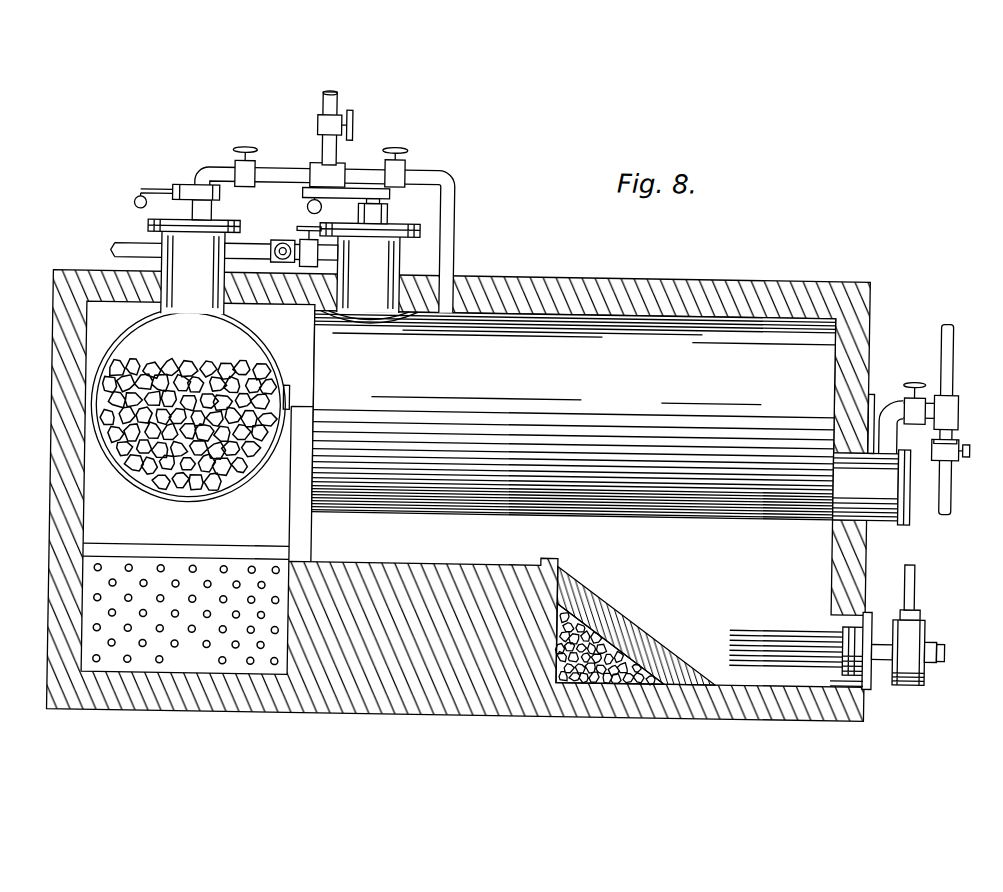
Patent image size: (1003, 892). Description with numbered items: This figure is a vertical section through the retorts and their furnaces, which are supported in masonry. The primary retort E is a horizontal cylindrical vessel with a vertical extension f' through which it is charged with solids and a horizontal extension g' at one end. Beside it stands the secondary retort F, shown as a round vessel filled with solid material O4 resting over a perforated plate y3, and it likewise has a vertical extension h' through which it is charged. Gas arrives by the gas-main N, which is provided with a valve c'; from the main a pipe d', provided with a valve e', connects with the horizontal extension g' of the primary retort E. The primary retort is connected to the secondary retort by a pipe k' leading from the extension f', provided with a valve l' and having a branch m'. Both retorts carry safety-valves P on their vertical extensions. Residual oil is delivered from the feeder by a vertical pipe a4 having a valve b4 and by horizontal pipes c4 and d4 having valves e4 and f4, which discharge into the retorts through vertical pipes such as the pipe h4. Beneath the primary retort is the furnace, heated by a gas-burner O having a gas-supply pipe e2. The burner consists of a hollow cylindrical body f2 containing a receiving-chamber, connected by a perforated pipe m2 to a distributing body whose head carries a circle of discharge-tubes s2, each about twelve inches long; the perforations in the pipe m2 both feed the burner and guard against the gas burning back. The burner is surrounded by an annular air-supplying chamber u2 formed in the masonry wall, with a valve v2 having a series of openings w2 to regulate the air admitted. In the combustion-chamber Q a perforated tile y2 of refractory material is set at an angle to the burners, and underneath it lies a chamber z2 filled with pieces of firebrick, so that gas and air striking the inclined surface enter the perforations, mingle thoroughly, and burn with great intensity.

The vertical pipe a4 is at (332, 99).
The valve b4 is at (349, 126).
The horizontal pipe c4 is at (287, 172).
The horizontal pipe d4 is at (360, 174).
The valve e4 is at (236, 152).
The valve f4 is at (403, 152).
The safety-valve P is at (195, 193).
The pipe k' is at (135, 234).
The vertical extension h' is at (282, 229).
The valve l' is at (303, 233).
The branch m' is at (267, 258).
The vertical extension f' is at (421, 240).
The vertical pipe h4 is at (451, 268).
The secondary retort F is at (245, 352).
The fuel O4 is at (188, 409).
The primary retort E is at (574, 415).
The combustion-chamber Q is at (694, 617).
The gas-main N is at (951, 364).
The pipe d' is at (890, 410).
The valve e' is at (919, 393).
The valve c' is at (960, 443).
The horizontal extension g' is at (906, 460).
The discharge-tubes s2 is at (762, 633).
The annular air-supplying chamber u2 is at (852, 670).
The valve v2 is at (869, 612).
The pipe m2 is at (884, 666).
The gas-burner O is at (928, 640).
The openings w2 is at (922, 608).
The gas-supply pipe e2 is at (916, 578).
The hollow cylindrical body f2 is at (925, 679).
The perforated tile y2 is at (633, 632).
The chamber z2 is at (605, 680).
The perforated plate y3 is at (203, 655).